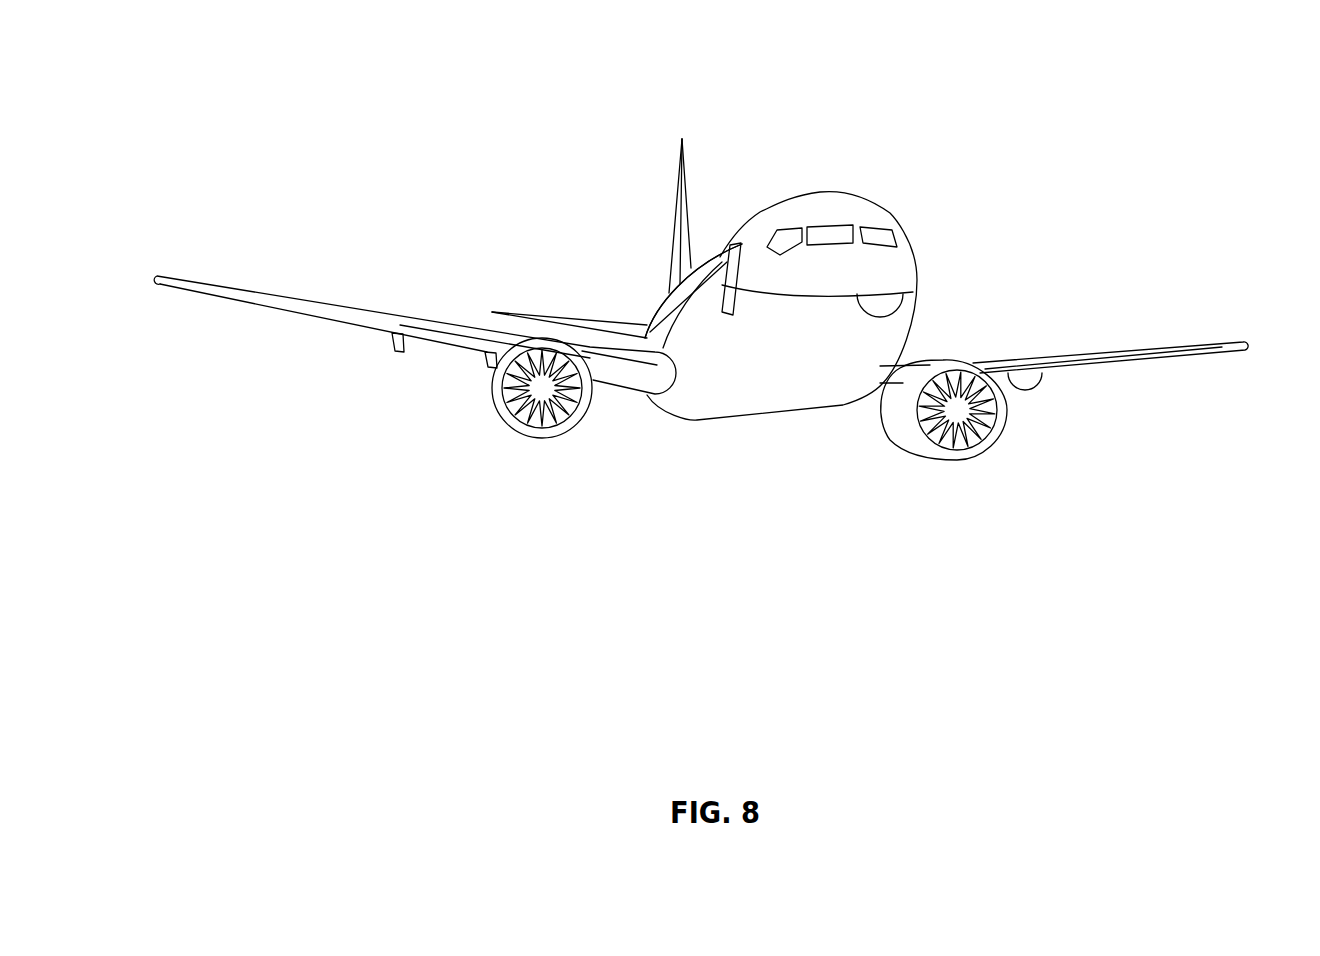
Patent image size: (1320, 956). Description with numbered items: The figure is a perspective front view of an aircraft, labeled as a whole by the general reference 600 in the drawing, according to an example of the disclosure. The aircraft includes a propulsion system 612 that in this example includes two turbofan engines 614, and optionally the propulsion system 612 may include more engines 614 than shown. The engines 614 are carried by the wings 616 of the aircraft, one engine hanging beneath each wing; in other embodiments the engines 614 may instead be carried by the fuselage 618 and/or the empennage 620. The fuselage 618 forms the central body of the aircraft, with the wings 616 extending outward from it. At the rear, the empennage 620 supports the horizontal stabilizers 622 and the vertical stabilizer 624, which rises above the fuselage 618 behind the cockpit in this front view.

The aircraft system 600 is at (432, 88).
The propulsion system 612 is at (1045, 449).
The turbofan engines 614 is at (538, 438).
The wings 616 is at (302, 302).
The fuselage 618 is at (915, 262).
The empennage 620 is at (667, 292).
The horizontal stabilizers 622 is at (532, 312).
The vertical stabilizer 624 is at (680, 181).